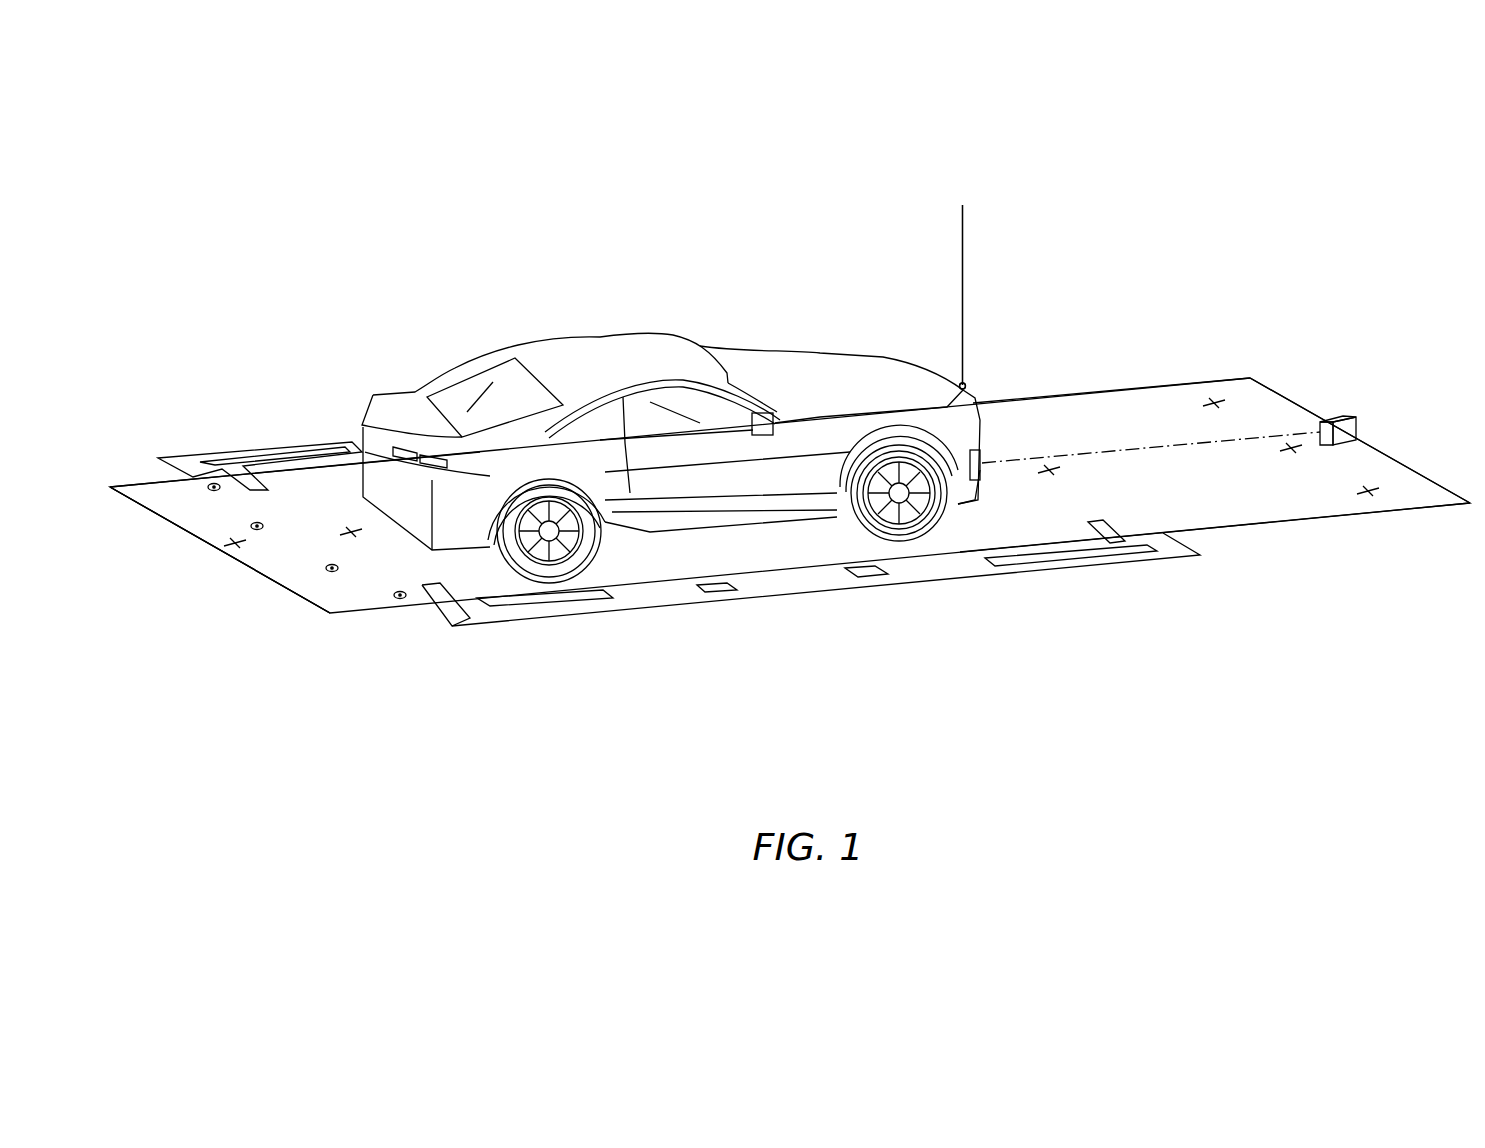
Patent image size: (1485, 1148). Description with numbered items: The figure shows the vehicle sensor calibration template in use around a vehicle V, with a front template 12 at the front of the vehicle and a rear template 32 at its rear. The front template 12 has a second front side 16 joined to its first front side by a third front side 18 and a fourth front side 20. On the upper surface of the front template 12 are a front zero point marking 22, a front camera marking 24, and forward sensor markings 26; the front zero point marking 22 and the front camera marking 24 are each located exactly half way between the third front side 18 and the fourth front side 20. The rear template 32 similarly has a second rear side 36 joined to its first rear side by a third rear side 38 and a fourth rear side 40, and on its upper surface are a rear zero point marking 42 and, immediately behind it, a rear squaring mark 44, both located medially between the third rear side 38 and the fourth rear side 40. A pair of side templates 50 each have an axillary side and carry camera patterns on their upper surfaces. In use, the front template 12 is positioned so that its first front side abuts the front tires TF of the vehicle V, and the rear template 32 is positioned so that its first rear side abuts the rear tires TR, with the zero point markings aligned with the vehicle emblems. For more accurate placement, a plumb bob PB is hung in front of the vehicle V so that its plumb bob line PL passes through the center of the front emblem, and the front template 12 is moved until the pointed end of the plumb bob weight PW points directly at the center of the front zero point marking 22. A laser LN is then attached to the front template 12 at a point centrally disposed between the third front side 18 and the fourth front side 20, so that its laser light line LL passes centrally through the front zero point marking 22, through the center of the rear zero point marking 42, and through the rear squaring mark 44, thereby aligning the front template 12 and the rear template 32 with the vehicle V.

The front template 12 is at (1272, 508).
The second front side 16 is at (1388, 456).
The third front side 18 is at (1376, 516).
The fourth front side 20 is at (1140, 388).
The front zero point marking 22 is at (1052, 470).
The front camera marking 24 is at (1290, 448).
The forward sensor markings 26 is at (1213, 403).
The rear template 32 is at (292, 600).
The second rear side 36 is at (172, 523).
The third rear side 38 is at (380, 613).
The fourth rear side 40 is at (143, 478).
The rear zero point marking 42 is at (348, 533).
The rear squaring mark 44 is at (236, 546).
The side templates 50 is at (277, 432).
The vehicle V is at (676, 474).
The rear tires TR is at (538, 575).
The front tires TF is at (905, 538).
The plumb bob PB is at (978, 226).
The pole PL is at (964, 291).
The plumb bob weight PW is at (967, 385).
The laser LN is at (1337, 418).
The laser light line LL is at (1136, 440).